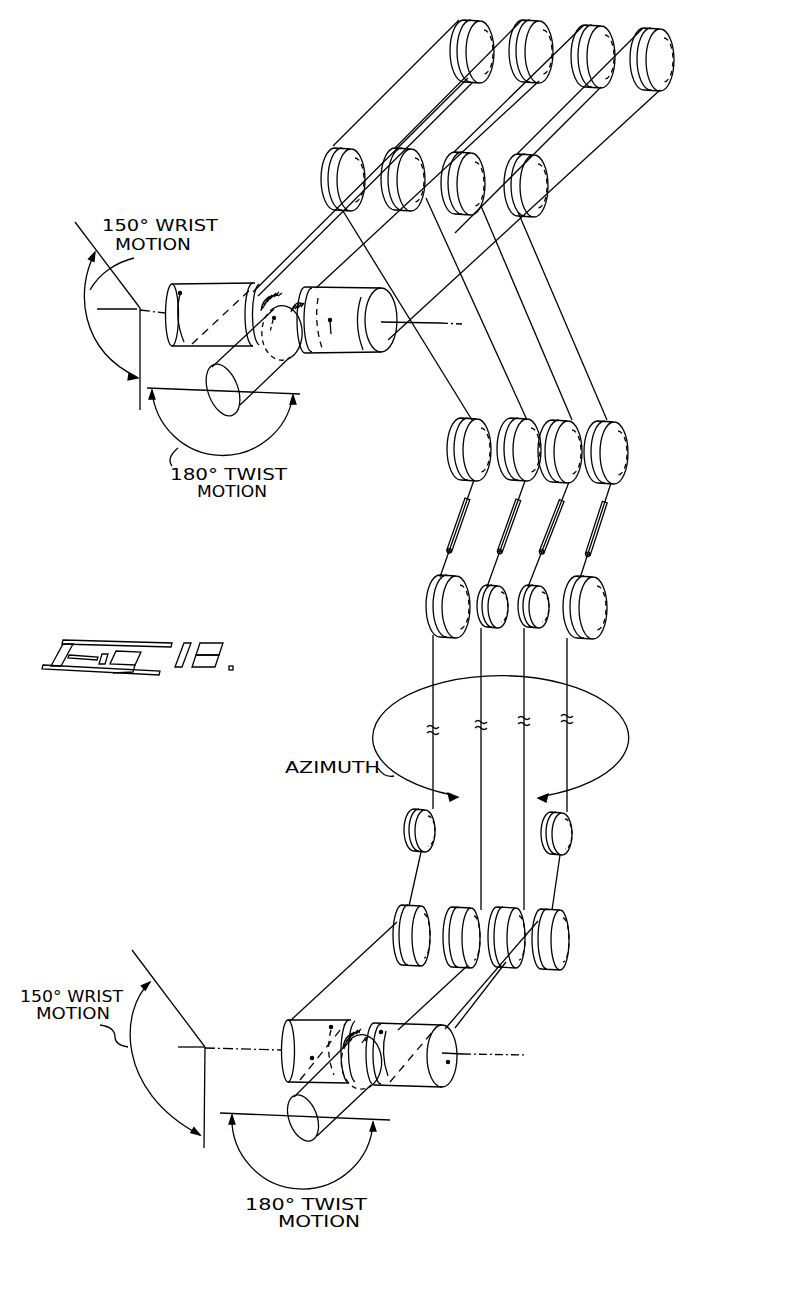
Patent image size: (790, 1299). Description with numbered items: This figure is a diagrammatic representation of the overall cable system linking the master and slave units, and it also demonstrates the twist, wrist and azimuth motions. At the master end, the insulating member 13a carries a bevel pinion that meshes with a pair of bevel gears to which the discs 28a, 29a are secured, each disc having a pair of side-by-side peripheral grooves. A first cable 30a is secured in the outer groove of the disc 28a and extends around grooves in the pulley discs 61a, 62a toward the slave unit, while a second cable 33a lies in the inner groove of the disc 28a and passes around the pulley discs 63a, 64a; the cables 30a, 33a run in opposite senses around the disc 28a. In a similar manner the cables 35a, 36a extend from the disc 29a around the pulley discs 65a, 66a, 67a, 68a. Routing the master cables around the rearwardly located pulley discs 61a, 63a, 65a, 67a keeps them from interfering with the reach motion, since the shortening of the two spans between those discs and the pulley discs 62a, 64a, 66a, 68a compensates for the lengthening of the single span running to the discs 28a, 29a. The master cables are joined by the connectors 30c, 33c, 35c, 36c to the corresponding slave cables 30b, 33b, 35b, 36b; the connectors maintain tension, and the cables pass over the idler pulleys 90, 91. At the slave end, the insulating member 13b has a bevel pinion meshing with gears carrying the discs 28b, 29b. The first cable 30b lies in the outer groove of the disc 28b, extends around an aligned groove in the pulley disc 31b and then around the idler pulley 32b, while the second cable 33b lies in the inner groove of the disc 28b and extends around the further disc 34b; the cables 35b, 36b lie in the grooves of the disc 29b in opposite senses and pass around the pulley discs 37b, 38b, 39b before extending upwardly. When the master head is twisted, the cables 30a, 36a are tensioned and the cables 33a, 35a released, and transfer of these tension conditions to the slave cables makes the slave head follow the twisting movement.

The pulley disc 61a is at (456, 32).
The pulley disc 63a is at (520, 33).
The pulley disc 67a is at (576, 37).
The pulley disc 65a is at (671, 50).
The pulley disc 62a is at (328, 147).
The pulley disc 64a is at (405, 150).
The pulley disc 68a is at (462, 153).
The pulley disc 66a is at (548, 200).
The first cable 30a is at (282, 261).
The second cable 33a is at (312, 223).
The cable 36a is at (392, 218).
The cable 35a is at (440, 292).
The disc 28a is at (213, 282).
The disc 29a is at (350, 352).
The insulating member 13a is at (260, 370).
The idler pulley 90 is at (519, 482).
The idler pulley 91 is at (481, 592).
The connector 30c is at (458, 525).
The connector 33c is at (508, 528).
The connector 36c is at (558, 528).
The connector 35c is at (592, 550).
The first cable 30b is at (431, 657).
The second cable 33b is at (481, 680).
The cable 36b is at (523, 679).
The cable 35b is at (567, 679).
The idler pulley 32b is at (409, 839).
The pulley disc 39b is at (560, 833).
The pulley disc 31b is at (415, 907).
The disc 34b is at (480, 907).
The pulley disc 37b is at (517, 909).
The pulley disc 38b is at (570, 925).
The disc 28b is at (290, 1019).
The disc 29b is at (418, 1083).
The insulating member 13b is at (306, 1092).